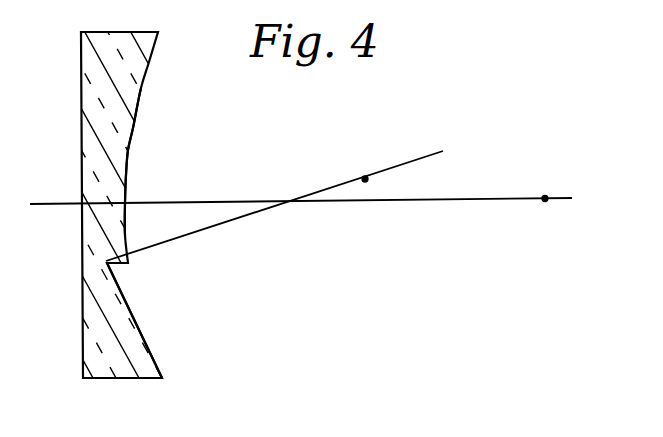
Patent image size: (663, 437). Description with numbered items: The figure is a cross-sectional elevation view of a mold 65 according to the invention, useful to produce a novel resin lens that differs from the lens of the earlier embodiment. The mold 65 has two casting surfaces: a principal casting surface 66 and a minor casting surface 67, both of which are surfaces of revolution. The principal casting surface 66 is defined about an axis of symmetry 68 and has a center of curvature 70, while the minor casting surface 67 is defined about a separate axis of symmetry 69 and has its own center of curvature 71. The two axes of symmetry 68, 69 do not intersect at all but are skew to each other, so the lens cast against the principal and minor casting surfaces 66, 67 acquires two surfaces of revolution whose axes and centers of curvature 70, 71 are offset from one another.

The mold 65 is at (142, 89).
The principal casting surface 66 is at (127, 143).
The minor casting surface 67 is at (132, 313).
The axis of symmetry 68 is at (442, 203).
The axis of symmetry 69 is at (207, 229).
The center of curvature 70 is at (545, 200).
The center of curvature 71 is at (365, 177).